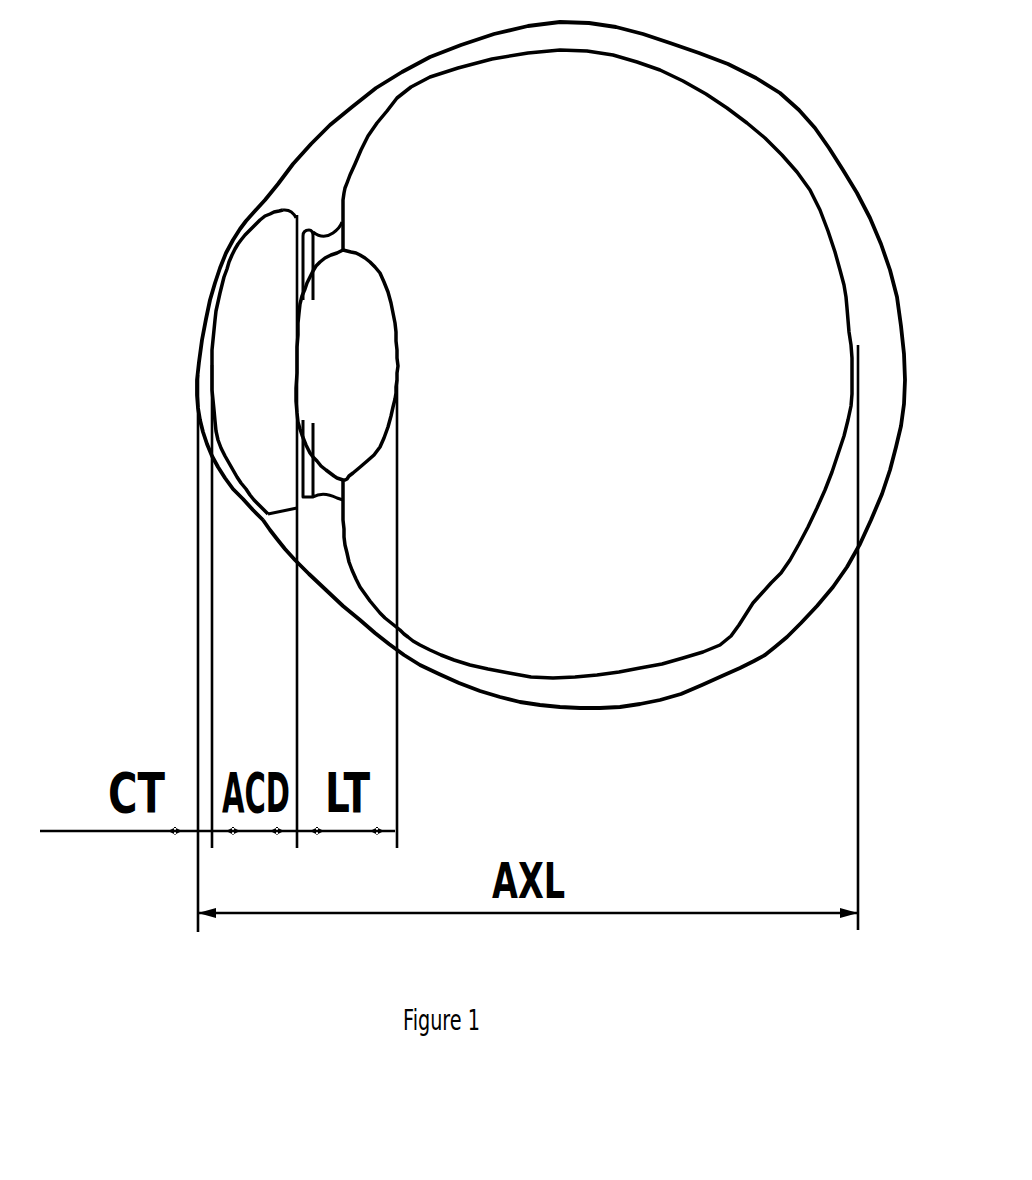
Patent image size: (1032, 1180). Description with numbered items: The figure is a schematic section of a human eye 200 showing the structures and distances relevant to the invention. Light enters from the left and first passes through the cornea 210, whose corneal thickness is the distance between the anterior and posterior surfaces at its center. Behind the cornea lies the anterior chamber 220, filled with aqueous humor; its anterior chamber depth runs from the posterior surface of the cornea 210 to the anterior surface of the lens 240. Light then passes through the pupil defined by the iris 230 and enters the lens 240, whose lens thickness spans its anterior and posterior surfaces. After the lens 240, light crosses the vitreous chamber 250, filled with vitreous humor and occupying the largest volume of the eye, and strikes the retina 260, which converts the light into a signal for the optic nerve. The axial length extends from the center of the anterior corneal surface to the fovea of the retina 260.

The human eye 200 is at (551, 365).
The cornea 210 is at (173, 362).
The anterior chamber 220 is at (197, 362).
The iris 230 is at (214, 344).
The lens 240 is at (230, 365).
The vitreous chamber 250 is at (551, 212).
The retina 260 is at (599, 364).